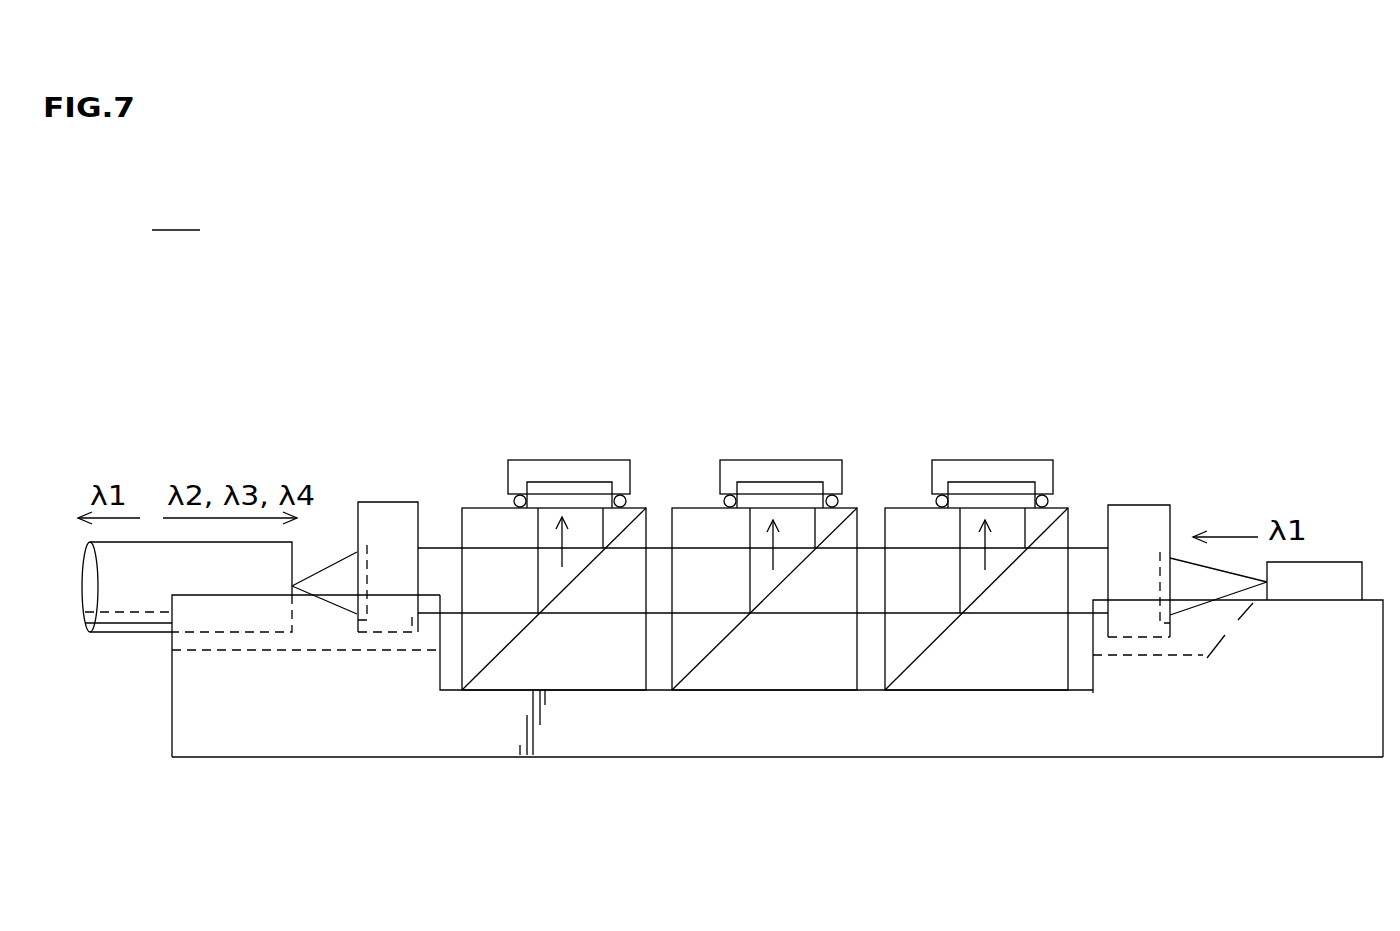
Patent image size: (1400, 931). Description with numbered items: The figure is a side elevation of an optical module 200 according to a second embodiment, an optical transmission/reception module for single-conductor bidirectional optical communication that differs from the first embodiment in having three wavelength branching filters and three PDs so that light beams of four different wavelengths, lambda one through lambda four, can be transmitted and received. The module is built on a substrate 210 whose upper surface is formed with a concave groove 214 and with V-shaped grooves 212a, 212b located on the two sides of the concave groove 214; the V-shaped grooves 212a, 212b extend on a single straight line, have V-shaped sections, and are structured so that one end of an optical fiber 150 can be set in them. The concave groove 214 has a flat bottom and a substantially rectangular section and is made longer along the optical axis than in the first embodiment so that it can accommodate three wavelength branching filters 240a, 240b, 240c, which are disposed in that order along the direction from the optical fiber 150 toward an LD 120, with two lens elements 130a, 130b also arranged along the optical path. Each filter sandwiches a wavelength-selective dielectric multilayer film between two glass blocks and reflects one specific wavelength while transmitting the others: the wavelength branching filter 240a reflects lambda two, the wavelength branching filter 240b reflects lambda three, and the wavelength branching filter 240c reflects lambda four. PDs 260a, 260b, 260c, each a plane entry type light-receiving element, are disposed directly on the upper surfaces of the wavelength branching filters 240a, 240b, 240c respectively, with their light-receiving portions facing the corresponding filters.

The optical module 200 is at (176, 214).
The LD 120 is at (1340, 562).
The lens element 130a is at (1135, 505).
The lens element 130b is at (378, 502).
The optical fiber 150 is at (113, 633).
The substrate 210 is at (1343, 762).
The V-shaped groove 212a is at (1182, 642).
The V-shaped groove 212b is at (327, 637).
The concave groove 214 is at (453, 672).
The wavelength branching filter 240a is at (467, 508).
The wavelength branching filter 240b is at (676, 508).
The wavelength branching filter 240c is at (888, 508).
The PD 260a is at (608, 460).
The PD 260b is at (818, 460).
The PD 260c is at (1030, 460).